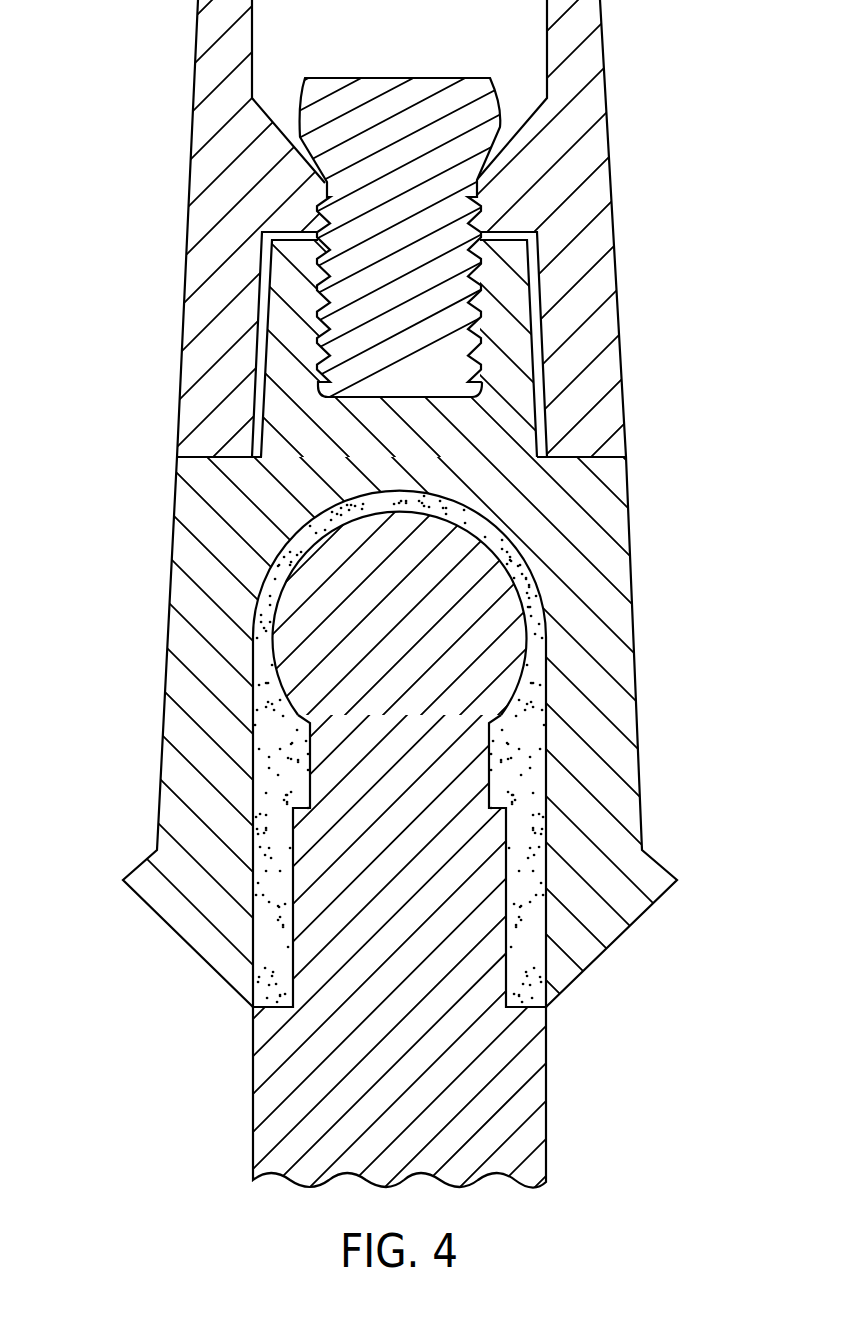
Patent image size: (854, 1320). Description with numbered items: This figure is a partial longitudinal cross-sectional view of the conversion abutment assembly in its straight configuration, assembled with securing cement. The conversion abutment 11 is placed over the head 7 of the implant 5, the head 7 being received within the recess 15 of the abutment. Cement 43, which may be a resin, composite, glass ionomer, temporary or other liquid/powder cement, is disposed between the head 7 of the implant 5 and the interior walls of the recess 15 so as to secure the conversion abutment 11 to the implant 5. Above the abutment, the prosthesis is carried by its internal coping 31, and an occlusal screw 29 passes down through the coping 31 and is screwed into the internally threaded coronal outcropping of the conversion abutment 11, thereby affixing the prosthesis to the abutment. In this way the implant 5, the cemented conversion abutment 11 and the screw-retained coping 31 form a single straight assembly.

The implant 5 is at (252, 1123).
The head 7 is at (527, 630).
The conversion abutment 11 is at (167, 613).
The recess 15 is at (263, 792).
The occlusal screw 29 is at (300, 90).
The internal coping 31 is at (183, 307).
The cement 43 is at (532, 733).